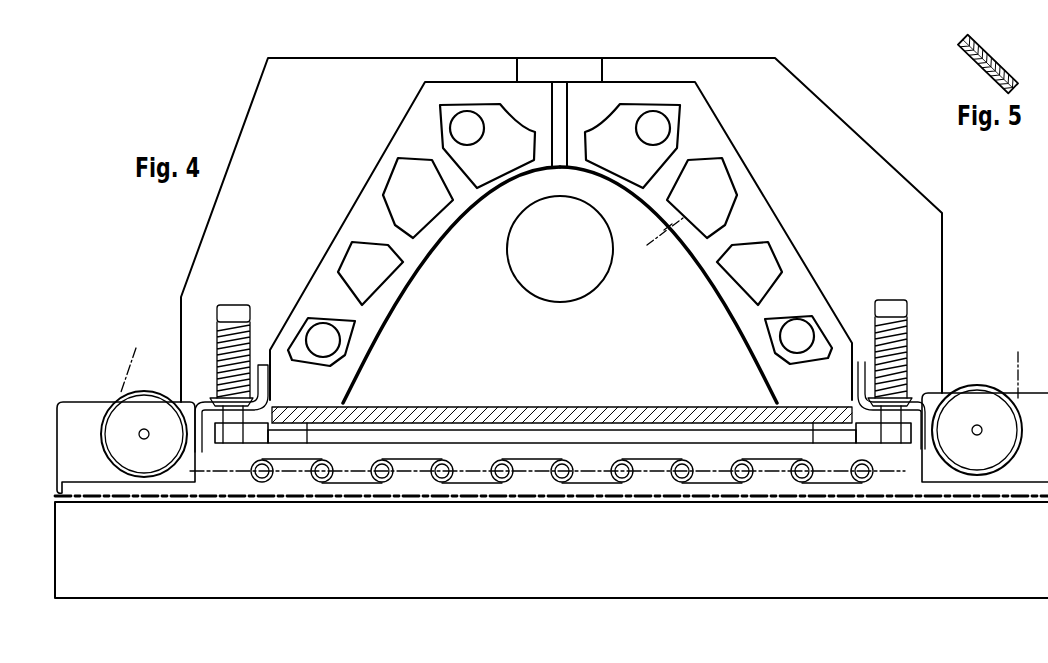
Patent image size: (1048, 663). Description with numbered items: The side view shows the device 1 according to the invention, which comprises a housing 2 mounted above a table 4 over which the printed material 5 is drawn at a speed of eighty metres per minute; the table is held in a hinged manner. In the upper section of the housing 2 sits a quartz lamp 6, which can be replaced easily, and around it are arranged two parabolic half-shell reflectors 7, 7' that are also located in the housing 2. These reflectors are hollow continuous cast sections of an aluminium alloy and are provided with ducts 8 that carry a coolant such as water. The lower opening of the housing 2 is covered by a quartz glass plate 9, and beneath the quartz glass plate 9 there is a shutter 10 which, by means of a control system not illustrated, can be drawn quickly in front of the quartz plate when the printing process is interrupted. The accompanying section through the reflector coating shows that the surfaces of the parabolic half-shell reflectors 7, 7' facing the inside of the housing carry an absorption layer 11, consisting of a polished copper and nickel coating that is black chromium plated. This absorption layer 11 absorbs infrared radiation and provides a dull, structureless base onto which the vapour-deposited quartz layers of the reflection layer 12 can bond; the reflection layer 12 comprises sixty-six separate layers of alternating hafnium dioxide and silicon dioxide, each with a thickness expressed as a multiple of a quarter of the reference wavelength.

In FIG. 4, the device 1 is at (232, 140).
In FIG. 4, the housing 2 is at (369, 72).
In FIG. 4, the table 4 is at (612, 590).
In FIG. 4, the printed material 5 is at (687, 220).
In FIG. 4, the quartz lamp 6 is at (600, 272).
In FIG. 4, the parabolic half-shell reflector 7 is at (451, 285).
In FIG. 4, the parabolic half-shell reflector 7' is at (668, 285).
In FIG. 4, the ducts 8 is at (360, 243).
In FIG. 4, the quartz glass plate 9 is at (580, 406).
In FIG. 4, the shutter 10 is at (500, 484).
In FIG. 4, the absorption layer 11 is at (688, 246).
In FIG. 5, the absorption layer 11 is at (985, 53).
In FIG. 4, the reflection layer 12 is at (669, 249).
In FIG. 5, the reflection layer 12 is at (989, 69).